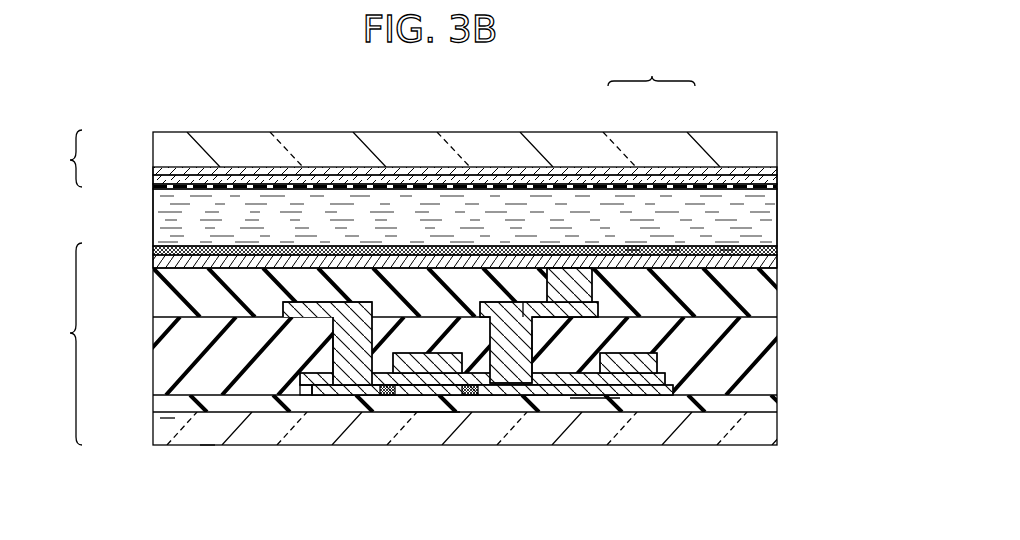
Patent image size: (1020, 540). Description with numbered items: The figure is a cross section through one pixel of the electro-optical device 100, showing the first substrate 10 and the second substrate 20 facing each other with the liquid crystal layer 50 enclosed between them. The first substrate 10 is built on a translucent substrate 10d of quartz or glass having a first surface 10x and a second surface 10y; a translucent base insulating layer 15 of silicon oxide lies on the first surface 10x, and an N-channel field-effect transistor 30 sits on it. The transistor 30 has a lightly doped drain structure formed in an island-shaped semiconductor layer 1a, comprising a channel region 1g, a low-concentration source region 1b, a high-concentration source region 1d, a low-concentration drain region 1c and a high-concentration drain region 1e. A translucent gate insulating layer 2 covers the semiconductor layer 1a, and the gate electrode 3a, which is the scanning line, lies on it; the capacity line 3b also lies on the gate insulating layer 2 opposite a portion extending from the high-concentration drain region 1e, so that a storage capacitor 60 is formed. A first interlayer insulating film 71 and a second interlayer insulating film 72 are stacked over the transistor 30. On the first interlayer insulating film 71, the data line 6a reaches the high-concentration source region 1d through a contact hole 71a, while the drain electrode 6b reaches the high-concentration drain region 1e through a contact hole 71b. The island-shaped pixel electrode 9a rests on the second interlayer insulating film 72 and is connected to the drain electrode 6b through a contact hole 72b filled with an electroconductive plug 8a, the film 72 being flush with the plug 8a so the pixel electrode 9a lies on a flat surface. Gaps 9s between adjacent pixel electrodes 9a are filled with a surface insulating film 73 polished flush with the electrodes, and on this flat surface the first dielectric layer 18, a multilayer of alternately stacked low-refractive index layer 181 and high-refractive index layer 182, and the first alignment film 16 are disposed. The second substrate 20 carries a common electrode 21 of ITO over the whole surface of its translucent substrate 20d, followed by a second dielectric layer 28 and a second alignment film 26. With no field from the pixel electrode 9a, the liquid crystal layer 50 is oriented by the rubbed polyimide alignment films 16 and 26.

The liquid crystal device 100 is at (298, 106).
The second substrate 20 is at (60, 158).
The translucent substrate 20d is at (757, 138).
The common electrode 21 is at (773, 168).
The second dielectric layer 28 is at (767, 179).
The second alignment film 26 is at (767, 187).
The liquid crystal layer 50 is at (155, 201).
The surface insulating film 73 is at (153, 247).
The pixel electrode 9a is at (397, 255).
The gaps 9s is at (186, 276).
The second interlayer insulating film 72 is at (775, 298).
The contact hole 72b is at (584, 282).
The first interlayer insulating film 71 is at (767, 360).
The contact hole 71a is at (344, 398).
The contact hole 71b is at (526, 345).
The translucent base insulating layer 15 is at (777, 402).
The first substrate 10 is at (61, 344).
The translucent substrate 10d is at (777, 432).
The first surface 10x is at (167, 418).
The second surface 10y is at (207, 446).
The semiconductor layer 1a is at (310, 403).
The low-concentration source region 1b is at (373, 397).
The low-concentration drain region 1c is at (472, 397).
The high-concentration source region 1d is at (305, 390).
The high-concentration drain region 1e is at (497, 397).
The channel region 1g is at (407, 397).
The gate insulating layer 2 is at (550, 400).
The gate electrode 3a is at (442, 375).
The capacity line 3b is at (640, 375).
The field-effect transistor 30 is at (430, 418).
The storage capacitor 60 is at (597, 410).
The data line 6a is at (320, 300).
The drain electrode 6b is at (492, 288).
The plug 8a is at (563, 278).
The first dielectric layer 18 is at (651, 68).
The low-refractive index layer 181 is at (632, 250).
The high-refractive index layer 182 is at (672, 250).
The first alignment film 16 is at (727, 250).